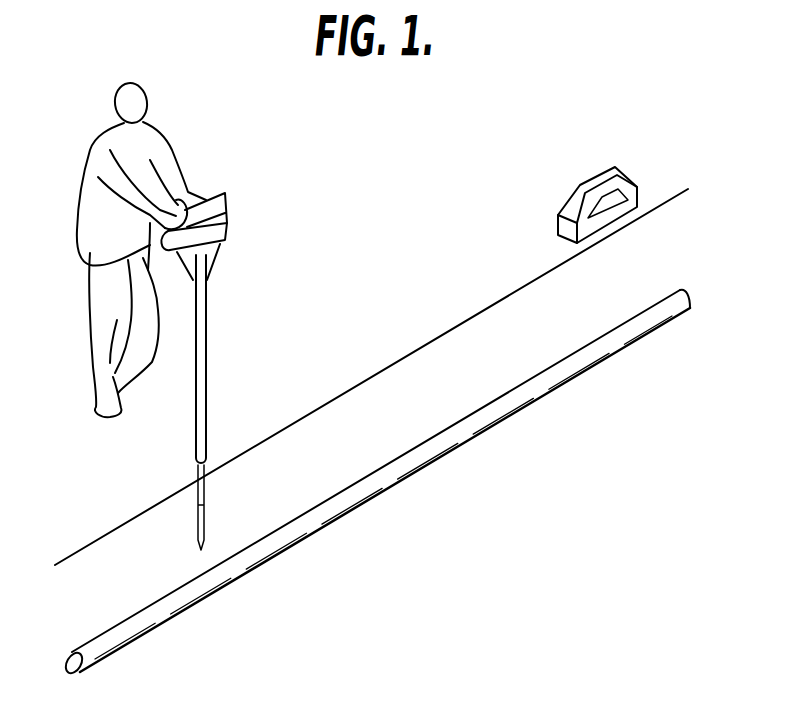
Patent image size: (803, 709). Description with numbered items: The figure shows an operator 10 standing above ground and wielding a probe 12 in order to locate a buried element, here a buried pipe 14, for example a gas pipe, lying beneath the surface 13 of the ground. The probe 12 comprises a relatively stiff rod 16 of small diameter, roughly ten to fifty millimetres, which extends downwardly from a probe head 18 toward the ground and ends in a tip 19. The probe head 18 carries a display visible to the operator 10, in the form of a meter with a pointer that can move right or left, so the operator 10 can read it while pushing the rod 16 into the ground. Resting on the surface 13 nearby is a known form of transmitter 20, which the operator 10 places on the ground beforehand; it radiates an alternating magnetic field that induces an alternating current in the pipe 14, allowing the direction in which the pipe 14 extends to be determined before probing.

The operator 10 is at (102, 160).
The probe 12 is at (217, 354).
The surface of the ground 13 is at (122, 527).
The buried pipe 14 is at (440, 443).
The rod 16 is at (205, 377).
The probe head 18 is at (217, 187).
The tip 19 is at (197, 545).
The transmitter 20 is at (612, 165).